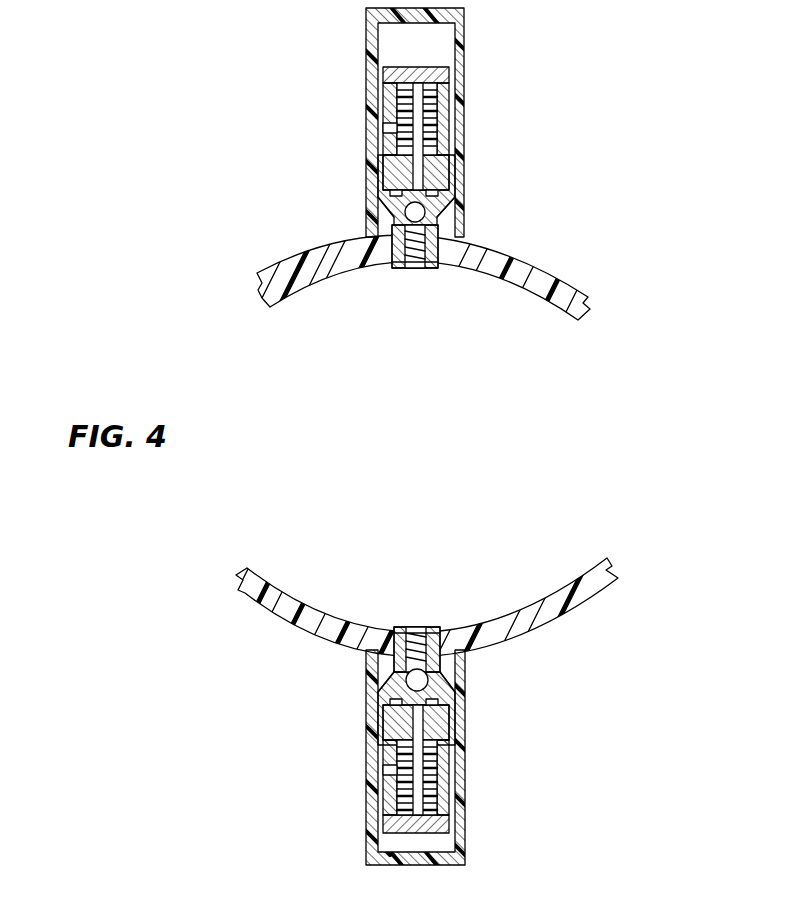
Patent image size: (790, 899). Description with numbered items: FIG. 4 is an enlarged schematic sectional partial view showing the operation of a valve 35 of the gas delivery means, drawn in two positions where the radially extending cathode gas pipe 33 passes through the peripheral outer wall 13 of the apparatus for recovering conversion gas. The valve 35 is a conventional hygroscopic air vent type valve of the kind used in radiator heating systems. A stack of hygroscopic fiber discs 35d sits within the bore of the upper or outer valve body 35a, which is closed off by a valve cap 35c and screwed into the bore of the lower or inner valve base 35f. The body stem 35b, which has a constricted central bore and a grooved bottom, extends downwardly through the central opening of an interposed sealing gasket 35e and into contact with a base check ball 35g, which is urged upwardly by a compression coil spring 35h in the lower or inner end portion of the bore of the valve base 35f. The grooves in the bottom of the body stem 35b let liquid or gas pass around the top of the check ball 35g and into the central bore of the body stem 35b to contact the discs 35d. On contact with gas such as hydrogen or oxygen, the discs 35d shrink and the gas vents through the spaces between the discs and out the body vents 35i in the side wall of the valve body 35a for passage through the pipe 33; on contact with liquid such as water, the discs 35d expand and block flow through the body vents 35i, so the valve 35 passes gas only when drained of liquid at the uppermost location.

The peripheral outer wall 13 is at (530, 262).
The cathode gas pipe 33 is at (465, 37).
The valve 35 is at (378, 173).
The valve body 35a is at (386, 104).
The body stem 35b is at (380, 204).
The valve cap 35c is at (448, 71).
The hygroscopic fiber discs 35d is at (432, 101).
The sealing gasket 35e is at (455, 175).
The valve base 35f is at (440, 210).
The base check ball 35g is at (426, 213).
The compression coil spring 35h is at (408, 243).
The body vents 35i is at (390, 130).